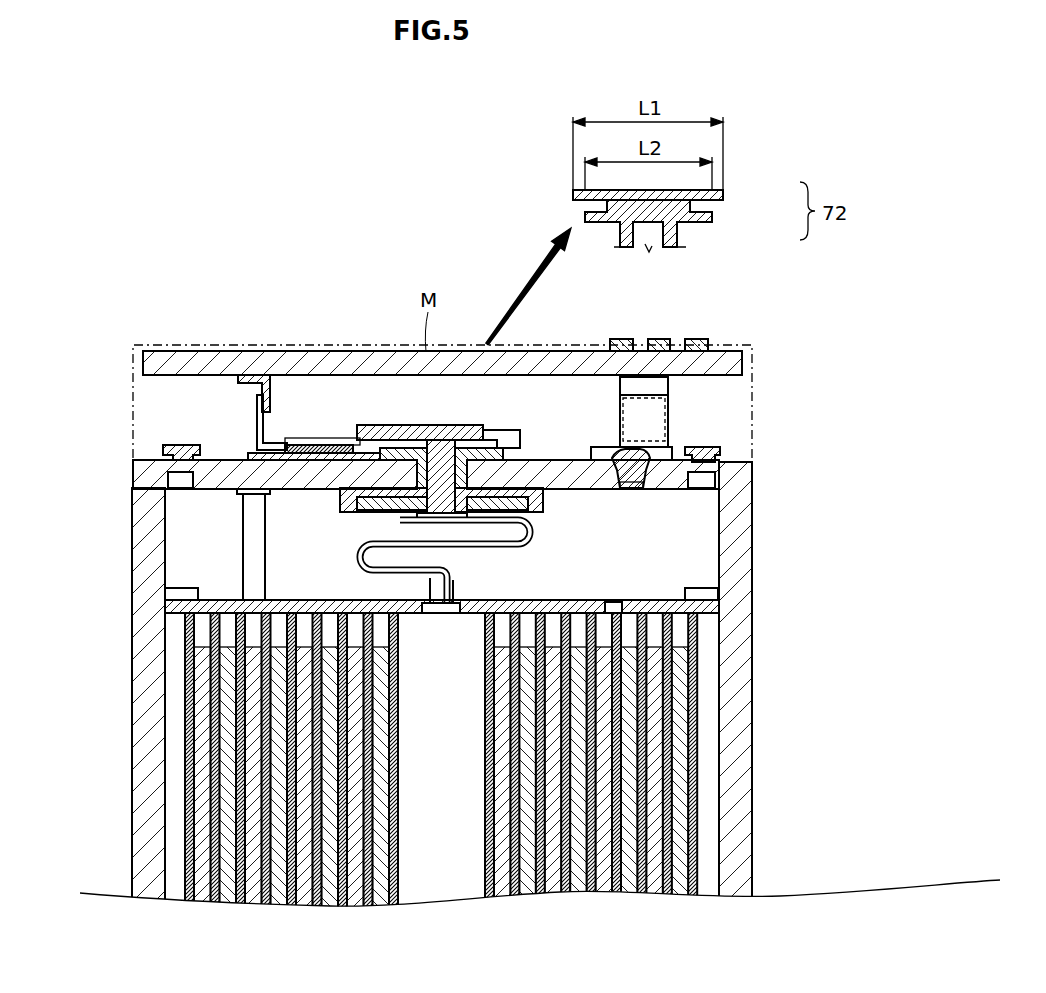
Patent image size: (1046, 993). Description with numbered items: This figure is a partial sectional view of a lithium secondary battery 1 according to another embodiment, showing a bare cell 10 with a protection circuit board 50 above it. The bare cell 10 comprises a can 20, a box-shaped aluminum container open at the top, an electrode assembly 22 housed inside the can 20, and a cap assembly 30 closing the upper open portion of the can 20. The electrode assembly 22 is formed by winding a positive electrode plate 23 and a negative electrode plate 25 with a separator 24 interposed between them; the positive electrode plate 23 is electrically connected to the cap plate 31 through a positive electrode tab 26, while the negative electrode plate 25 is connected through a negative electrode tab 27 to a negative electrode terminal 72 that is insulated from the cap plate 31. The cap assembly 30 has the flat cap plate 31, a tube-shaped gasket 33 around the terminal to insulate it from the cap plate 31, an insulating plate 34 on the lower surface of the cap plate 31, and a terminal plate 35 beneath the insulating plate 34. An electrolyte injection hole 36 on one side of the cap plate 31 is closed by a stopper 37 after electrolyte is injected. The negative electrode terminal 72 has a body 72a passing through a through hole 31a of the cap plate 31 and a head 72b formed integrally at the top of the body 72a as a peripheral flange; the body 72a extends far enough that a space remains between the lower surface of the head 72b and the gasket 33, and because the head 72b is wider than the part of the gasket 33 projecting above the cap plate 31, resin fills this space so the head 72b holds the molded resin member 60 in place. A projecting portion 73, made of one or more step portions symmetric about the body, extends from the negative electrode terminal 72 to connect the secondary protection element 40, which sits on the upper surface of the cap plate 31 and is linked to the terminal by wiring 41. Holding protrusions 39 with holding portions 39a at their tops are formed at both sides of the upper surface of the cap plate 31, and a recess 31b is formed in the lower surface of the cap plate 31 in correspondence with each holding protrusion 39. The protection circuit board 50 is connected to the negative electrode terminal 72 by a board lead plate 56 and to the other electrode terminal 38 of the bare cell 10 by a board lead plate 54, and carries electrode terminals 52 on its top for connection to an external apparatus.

The lithium secondary battery 1 is at (748, 331).
The bare cell 10 is at (764, 489).
The can 20 is at (740, 777).
The electrode assembly 22 is at (516, 799).
The positive electrode plate 23 is at (678, 885).
The separator 24 is at (690, 890).
The negative electrode plate 25 is at (653, 893).
The positive electrode tab 26 is at (248, 555).
The negative electrode tab 27 is at (357, 557).
The cap assembly 30 is at (523, 434).
The cap plate 31 is at (140, 470).
The through hole 31a is at (460, 440).
The recess 31b is at (180, 488).
The gasket 33 is at (497, 432).
The insulating plate 34 is at (347, 453).
The terminal plate 35 is at (530, 520).
The electrolyte injection hole 36 is at (635, 490).
The stopper 37 is at (615, 458).
The electrode terminal 38 is at (670, 450).
The holding protrusion 39 is at (178, 456).
The head of fastening member 39a is at (172, 447).
The secondary protection element 40 is at (258, 443).
The wiring 41 is at (403, 425).
The protection circuit board 50 is at (190, 356).
The electrode terminals 52 is at (697, 340).
The board lead plate 54 is at (657, 388).
The board lead plate 56 is at (259, 378).
The molded resin member 60 is at (752, 405).
The negative electrode terminal 72 is at (445, 430).
The body 72a is at (657, 235).
The head 72b is at (723, 197).
The projecting portion 73 is at (390, 450).